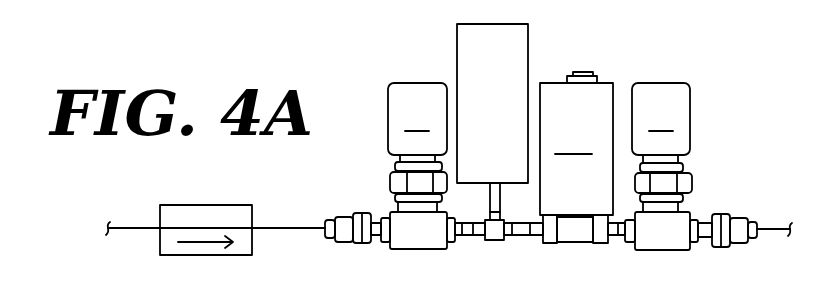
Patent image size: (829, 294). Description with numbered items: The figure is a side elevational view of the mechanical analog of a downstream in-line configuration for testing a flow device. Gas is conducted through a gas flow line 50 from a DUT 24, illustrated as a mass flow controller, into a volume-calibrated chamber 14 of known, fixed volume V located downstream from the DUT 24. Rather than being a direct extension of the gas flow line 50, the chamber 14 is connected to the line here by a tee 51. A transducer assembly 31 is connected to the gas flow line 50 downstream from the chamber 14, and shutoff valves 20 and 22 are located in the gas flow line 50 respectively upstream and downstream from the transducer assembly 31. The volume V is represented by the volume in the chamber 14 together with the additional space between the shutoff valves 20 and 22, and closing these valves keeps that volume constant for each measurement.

The chamber 14 is at (520, 47).
The shutoff valve 20 is at (390, 166).
The shutoff valve 22 is at (691, 166).
The DUT 24 is at (220, 204).
The transducer assembly 31 is at (595, 98).
The gas flow line 50 is at (138, 229).
The tee 51 is at (494, 232).